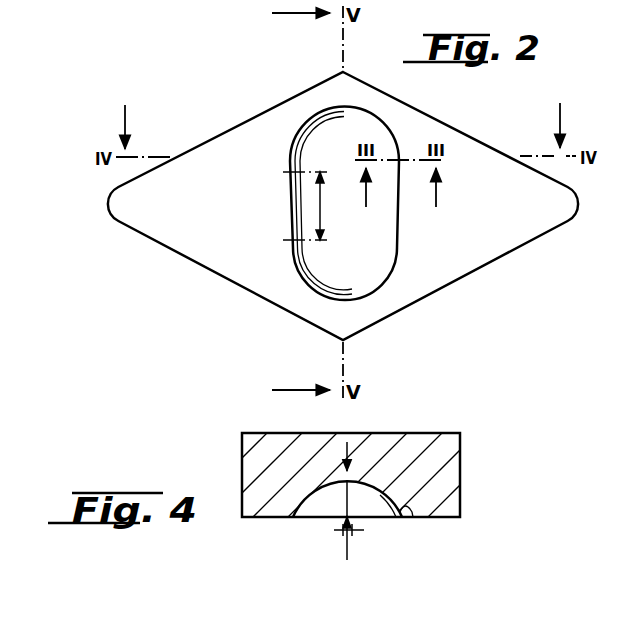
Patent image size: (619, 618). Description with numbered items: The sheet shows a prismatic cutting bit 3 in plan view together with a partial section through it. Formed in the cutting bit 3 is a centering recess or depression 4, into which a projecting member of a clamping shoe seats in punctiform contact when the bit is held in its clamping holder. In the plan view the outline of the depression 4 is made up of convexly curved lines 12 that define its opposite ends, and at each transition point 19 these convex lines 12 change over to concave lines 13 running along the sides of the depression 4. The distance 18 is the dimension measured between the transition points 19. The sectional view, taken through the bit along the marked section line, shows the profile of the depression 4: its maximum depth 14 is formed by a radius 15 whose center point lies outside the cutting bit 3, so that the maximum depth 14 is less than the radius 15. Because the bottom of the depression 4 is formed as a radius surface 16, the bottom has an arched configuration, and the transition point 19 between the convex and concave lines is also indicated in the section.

In FIG. 2, the cutting bit 3 is at (188, 274).
In FIG. 4, the cutting bit 3 is at (470, 527).
In FIG. 2, the centering recess or depression 4 is at (330, 270).
In FIG. 4, the centering recess or depression 4 is at (330, 505).
In FIG. 2, the convexly curved lines 12 is at (346, 112).
In FIG. 2, the concave lines 13 is at (296, 214).
In FIG. 4, the concave lines 13 is at (387, 519).
In FIG. 4, the maximum depth 14 is at (351, 501).
In FIG. 4, the radius 15 is at (353, 532).
In FIG. 2, the radius surface 16 is at (380, 262).
In FIG. 4, the radius surface 16 is at (312, 500).
In FIG. 2, the distance 18 is at (321, 209).
In FIG. 2, the transition point 19 is at (292, 167).
In FIG. 4, the transition point 19 is at (405, 512).